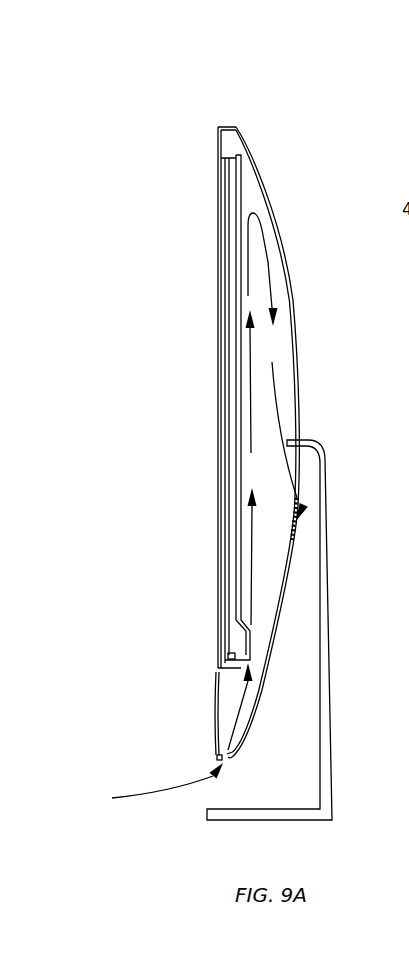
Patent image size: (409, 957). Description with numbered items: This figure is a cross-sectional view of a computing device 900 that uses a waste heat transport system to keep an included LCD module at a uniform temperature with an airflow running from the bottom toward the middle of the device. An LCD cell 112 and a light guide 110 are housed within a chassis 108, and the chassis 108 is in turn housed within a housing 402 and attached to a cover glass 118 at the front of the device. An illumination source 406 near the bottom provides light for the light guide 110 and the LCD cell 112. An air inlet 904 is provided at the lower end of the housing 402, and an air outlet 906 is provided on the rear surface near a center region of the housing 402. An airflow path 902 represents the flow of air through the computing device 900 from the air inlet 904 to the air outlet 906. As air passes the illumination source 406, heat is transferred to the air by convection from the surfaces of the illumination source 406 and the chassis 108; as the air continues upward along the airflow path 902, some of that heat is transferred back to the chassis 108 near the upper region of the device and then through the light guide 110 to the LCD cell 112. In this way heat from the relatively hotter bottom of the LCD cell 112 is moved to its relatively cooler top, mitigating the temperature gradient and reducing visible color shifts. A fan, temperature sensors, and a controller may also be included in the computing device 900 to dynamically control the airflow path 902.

The computing device 900 is at (197, 71).
The cover glass 118 is at (217, 146).
The LCD cell 112 is at (224, 197).
The light guide 110 is at (233, 248).
The chassis 108 is at (242, 177).
The housing 402 is at (295, 342).
The airflow path 902 is at (268, 263).
The air outlet 906 is at (300, 522).
The illumination source 406 is at (232, 653).
The air inlet 904 is at (216, 756).